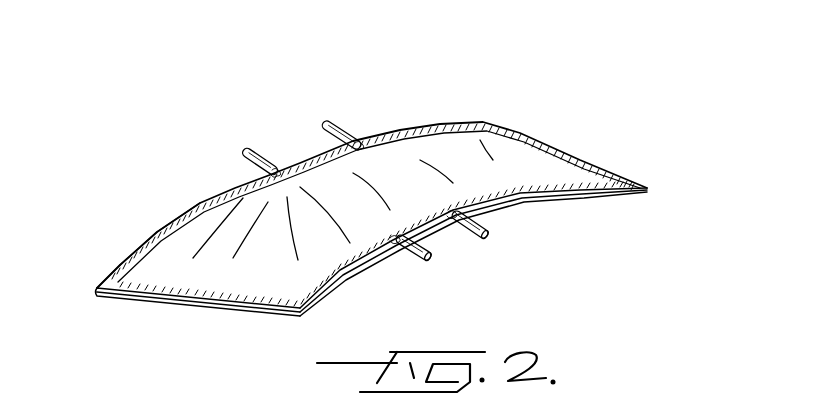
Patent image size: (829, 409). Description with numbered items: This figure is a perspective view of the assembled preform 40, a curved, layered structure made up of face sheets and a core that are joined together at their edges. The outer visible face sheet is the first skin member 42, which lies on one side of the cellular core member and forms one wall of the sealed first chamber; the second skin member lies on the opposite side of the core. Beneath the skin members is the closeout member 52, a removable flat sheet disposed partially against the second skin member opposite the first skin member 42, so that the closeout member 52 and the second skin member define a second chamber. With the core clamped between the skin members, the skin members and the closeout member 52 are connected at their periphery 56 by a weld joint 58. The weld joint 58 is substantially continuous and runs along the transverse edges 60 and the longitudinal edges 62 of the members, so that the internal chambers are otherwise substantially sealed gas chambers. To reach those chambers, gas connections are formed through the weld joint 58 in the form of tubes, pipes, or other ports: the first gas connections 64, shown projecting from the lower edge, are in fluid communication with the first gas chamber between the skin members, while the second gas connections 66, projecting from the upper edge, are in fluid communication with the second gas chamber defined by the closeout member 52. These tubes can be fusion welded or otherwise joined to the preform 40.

The preform 40 is at (367, 82).
The first skin member 42 is at (400, 150).
The closeout member 52 is at (270, 310).
The periphery 56 is at (107, 280).
The weld joint 58 is at (160, 232).
The transverse edges 60 is at (196, 203).
The longitudinal edges 62 is at (193, 303).
The first gas connections 64 is at (432, 242).
The second gas connections 66 is at (323, 128).